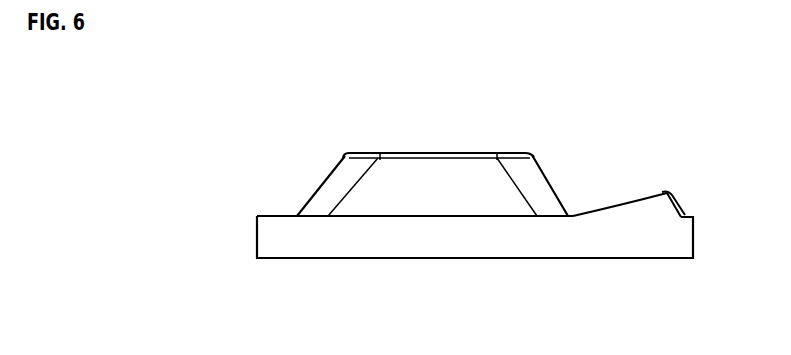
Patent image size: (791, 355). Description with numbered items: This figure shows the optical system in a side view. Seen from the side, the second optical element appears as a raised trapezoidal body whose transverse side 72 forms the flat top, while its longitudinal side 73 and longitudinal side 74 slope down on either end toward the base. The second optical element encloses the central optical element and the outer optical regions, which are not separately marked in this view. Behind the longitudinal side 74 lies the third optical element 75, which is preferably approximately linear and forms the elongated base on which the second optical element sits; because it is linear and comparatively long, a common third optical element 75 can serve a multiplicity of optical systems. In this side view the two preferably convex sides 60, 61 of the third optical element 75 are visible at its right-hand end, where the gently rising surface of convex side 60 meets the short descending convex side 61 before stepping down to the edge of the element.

The convex side 60 is at (652, 192).
The convex side 61 is at (678, 199).
The transverse side 72 is at (434, 165).
The longitudinal side 73 is at (322, 188).
The longitudinal side 74 is at (550, 168).
The third optical element 75 is at (642, 219).